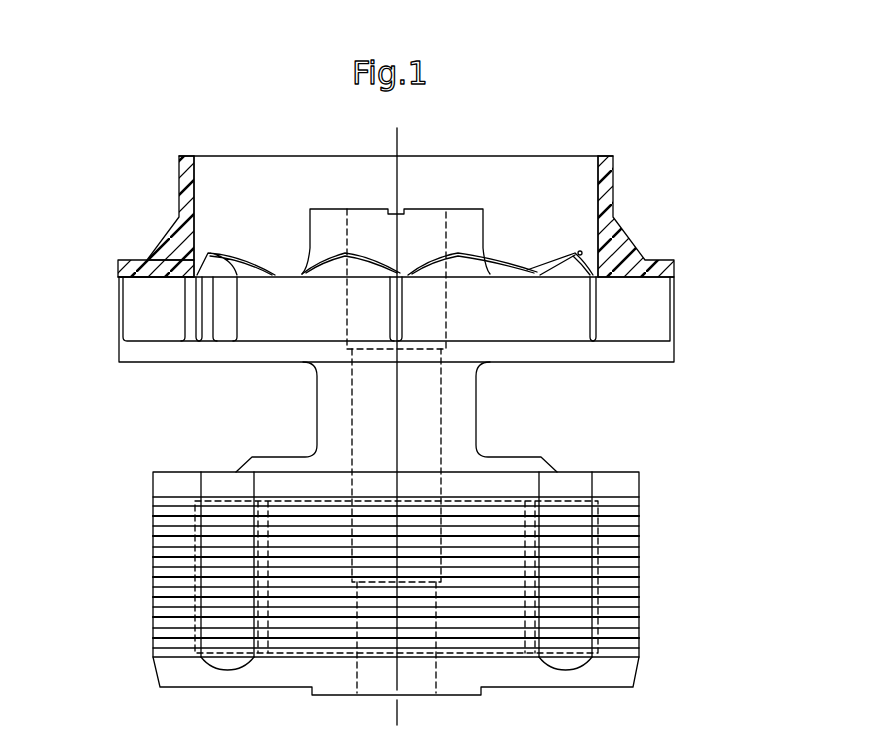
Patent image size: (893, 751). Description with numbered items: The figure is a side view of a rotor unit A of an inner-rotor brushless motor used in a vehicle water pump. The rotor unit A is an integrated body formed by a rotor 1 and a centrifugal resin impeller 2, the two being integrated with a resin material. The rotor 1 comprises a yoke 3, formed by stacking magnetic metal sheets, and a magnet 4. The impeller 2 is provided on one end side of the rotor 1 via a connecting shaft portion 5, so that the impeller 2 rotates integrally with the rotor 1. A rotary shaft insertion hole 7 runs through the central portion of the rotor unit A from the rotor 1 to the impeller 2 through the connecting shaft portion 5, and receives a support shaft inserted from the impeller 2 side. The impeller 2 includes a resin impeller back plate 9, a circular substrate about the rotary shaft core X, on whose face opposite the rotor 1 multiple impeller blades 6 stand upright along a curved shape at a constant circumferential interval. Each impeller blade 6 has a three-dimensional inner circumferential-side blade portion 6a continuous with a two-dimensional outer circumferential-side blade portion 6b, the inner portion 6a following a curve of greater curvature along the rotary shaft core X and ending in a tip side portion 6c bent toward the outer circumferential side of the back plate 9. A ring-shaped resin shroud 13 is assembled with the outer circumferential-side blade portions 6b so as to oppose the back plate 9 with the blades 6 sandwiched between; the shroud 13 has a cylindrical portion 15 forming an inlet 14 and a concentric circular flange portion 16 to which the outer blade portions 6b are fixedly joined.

The rotor 1 is at (388, 602).
The impeller 2 is at (352, 343).
The yoke 3 is at (638, 562).
The magnet 4 is at (245, 666).
The connecting shaft portion 5 is at (468, 413).
The impeller blades 6 is at (408, 308).
The inner circumferential-side blade portion 6a is at (245, 310).
The outer circumferential-side blade portion 6b is at (333, 315).
The tip side portion 6c is at (543, 260).
The rotary shaft insertion hole 7 is at (372, 240).
The impeller back plate 9 is at (140, 355).
The shroud 13 is at (617, 203).
The inlet 14 is at (514, 175).
The cylindrical portion 15 is at (179, 190).
The circular flange portion 16 is at (137, 264).
The rotor unit A is at (416, 192).
The rotary shaft core X is at (397, 413).